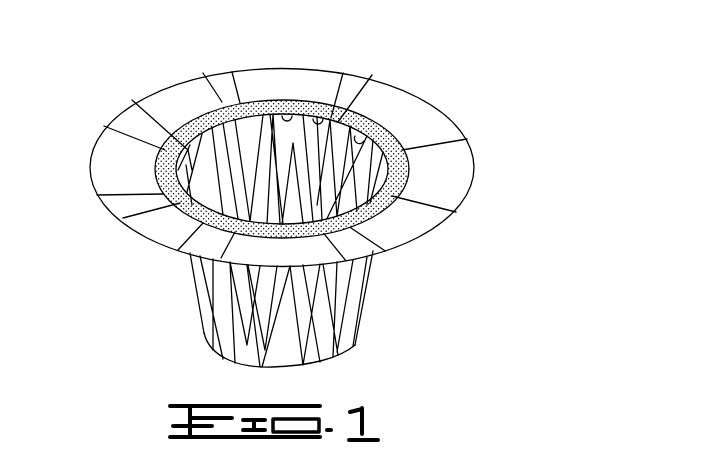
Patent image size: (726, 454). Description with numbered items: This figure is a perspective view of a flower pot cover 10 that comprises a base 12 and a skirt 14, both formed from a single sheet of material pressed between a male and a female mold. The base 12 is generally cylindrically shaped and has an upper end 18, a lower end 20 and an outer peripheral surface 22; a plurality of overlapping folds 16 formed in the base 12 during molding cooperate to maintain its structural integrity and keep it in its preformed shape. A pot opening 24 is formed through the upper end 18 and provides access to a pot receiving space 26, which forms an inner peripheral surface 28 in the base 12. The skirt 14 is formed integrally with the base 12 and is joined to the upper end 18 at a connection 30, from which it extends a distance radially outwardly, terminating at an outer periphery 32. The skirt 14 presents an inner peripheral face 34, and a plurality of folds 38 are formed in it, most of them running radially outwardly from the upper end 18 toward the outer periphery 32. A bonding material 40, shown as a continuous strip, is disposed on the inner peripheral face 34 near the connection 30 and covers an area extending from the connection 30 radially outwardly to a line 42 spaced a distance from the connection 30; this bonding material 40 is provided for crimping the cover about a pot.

The flower pot cover 10 is at (466, 262).
The base 12 is at (279, 319).
The skirt 14 is at (299, 161).
The overlapping folds 16 is at (210, 320).
The upper end 18 is at (288, 100).
The lower end 20 is at (333, 360).
The outer peripheral surface 22 is at (220, 345).
The pot opening 24 is at (321, 134).
The pot receiving space 26 is at (250, 138).
The inner peripheral surface 28 is at (157, 92).
The connection 30 is at (372, 75).
The outer periphery 32 is at (464, 130).
The inner peripheral face 34 is at (438, 212).
The folds 38 is at (120, 130).
The bonding material 40 is at (315, 117).
The line 42 is at (224, 99).